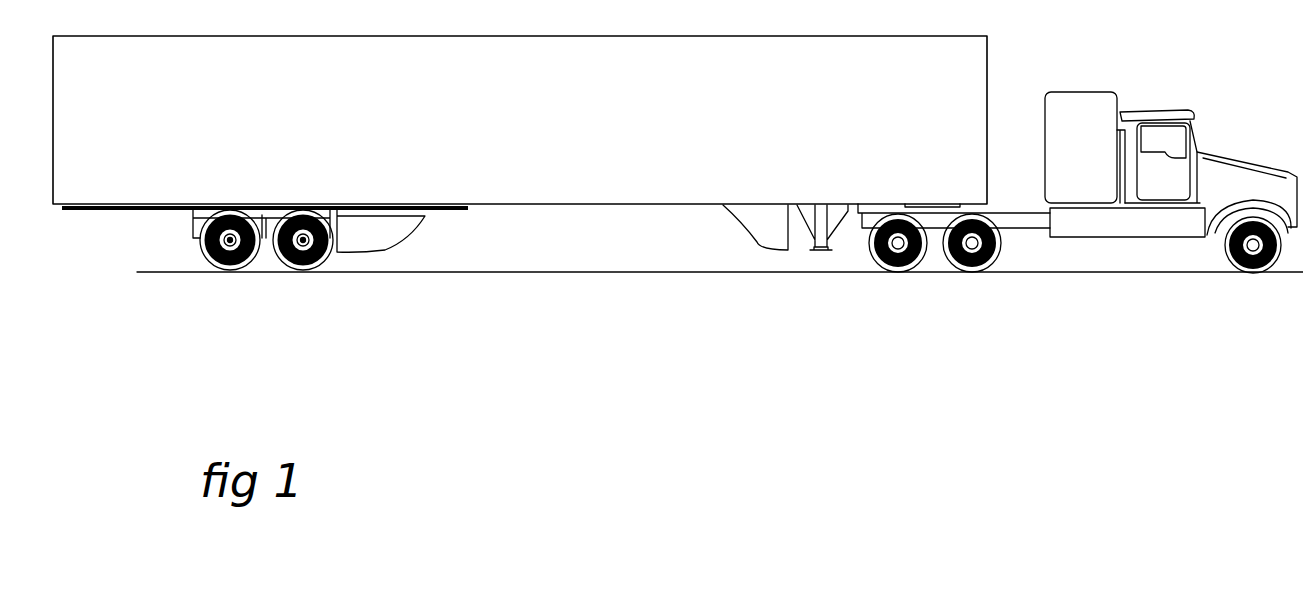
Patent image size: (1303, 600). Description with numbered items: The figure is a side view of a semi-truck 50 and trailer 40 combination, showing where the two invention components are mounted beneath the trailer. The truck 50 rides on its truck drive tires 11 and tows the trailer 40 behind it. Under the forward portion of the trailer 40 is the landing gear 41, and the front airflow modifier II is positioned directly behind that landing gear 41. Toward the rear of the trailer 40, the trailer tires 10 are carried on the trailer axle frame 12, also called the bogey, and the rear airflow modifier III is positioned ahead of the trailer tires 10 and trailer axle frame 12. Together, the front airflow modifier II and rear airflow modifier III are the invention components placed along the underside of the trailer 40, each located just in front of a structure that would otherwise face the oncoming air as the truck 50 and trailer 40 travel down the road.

The trailer 40 is at (765, 37).
The truck 50 is at (1157, 107).
The trailer tires 10 is at (308, 262).
The truck drive tires 11 is at (975, 263).
The trailer axle frame 12 is at (178, 222).
The landing gear 41 is at (828, 238).
The front airflow modifier II is at (777, 227).
The rear airflow modifier III is at (362, 238).